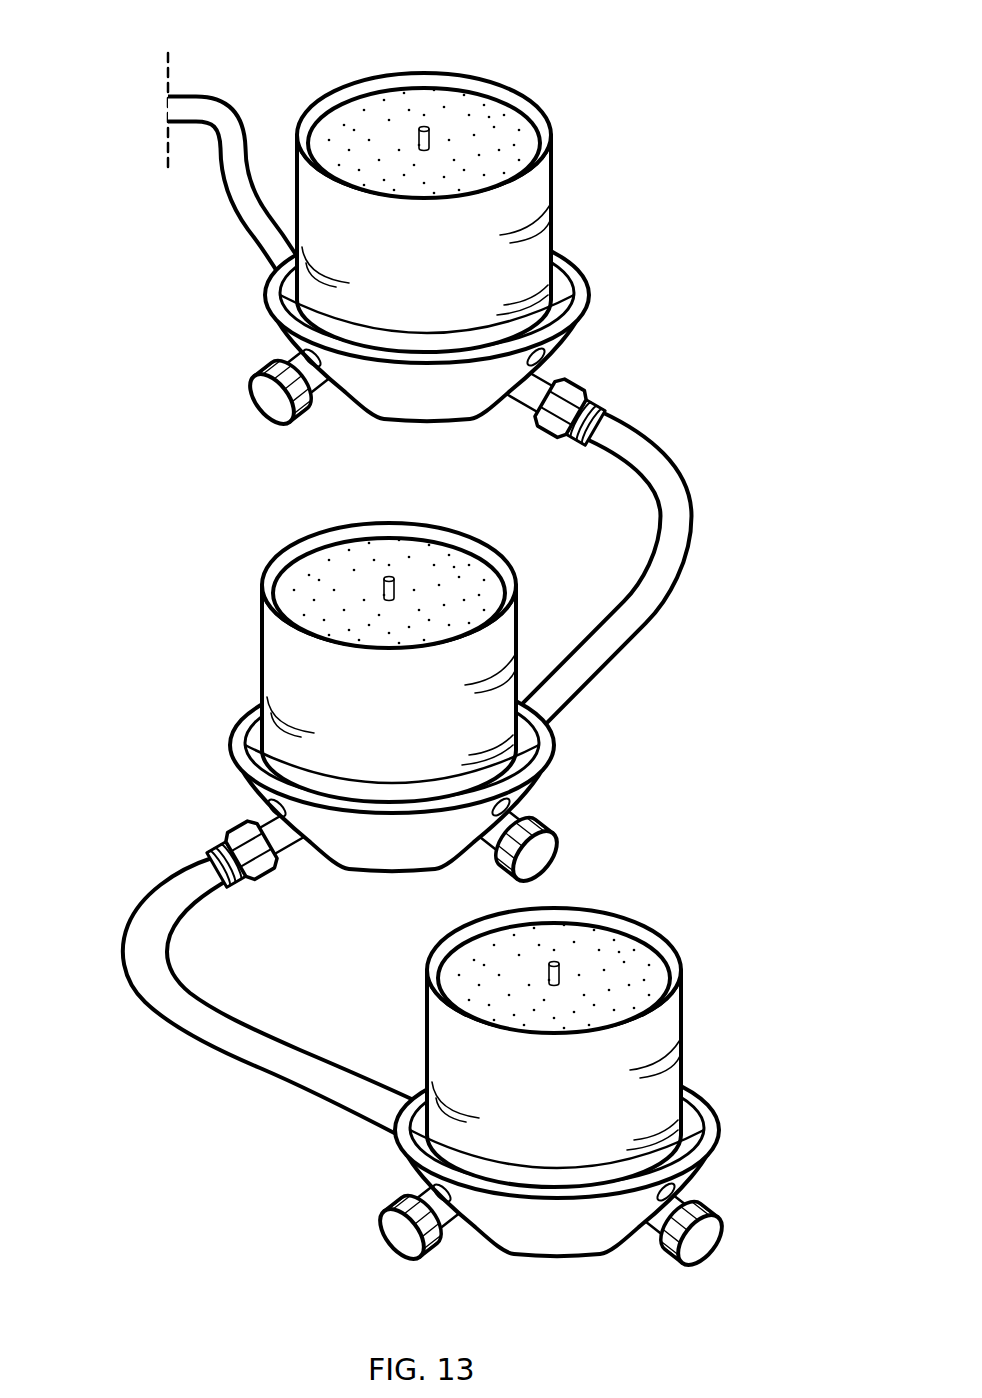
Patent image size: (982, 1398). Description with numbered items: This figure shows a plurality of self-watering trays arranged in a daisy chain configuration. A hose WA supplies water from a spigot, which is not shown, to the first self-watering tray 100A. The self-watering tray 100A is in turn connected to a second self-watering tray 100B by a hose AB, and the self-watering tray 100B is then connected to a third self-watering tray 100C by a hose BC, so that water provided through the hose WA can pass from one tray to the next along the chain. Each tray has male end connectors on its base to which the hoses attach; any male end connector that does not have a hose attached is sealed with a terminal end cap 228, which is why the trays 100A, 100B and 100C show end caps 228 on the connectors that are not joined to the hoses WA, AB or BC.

The terminal end cap 228 is at (252, 388).
The self-watering tray 100A is at (411, 447).
The self-watering tray 100B is at (398, 897).
The self-watering tray 100C is at (543, 1284).
The hose WA is at (240, 110).
The hose AB is at (680, 462).
The hose BC is at (123, 927).